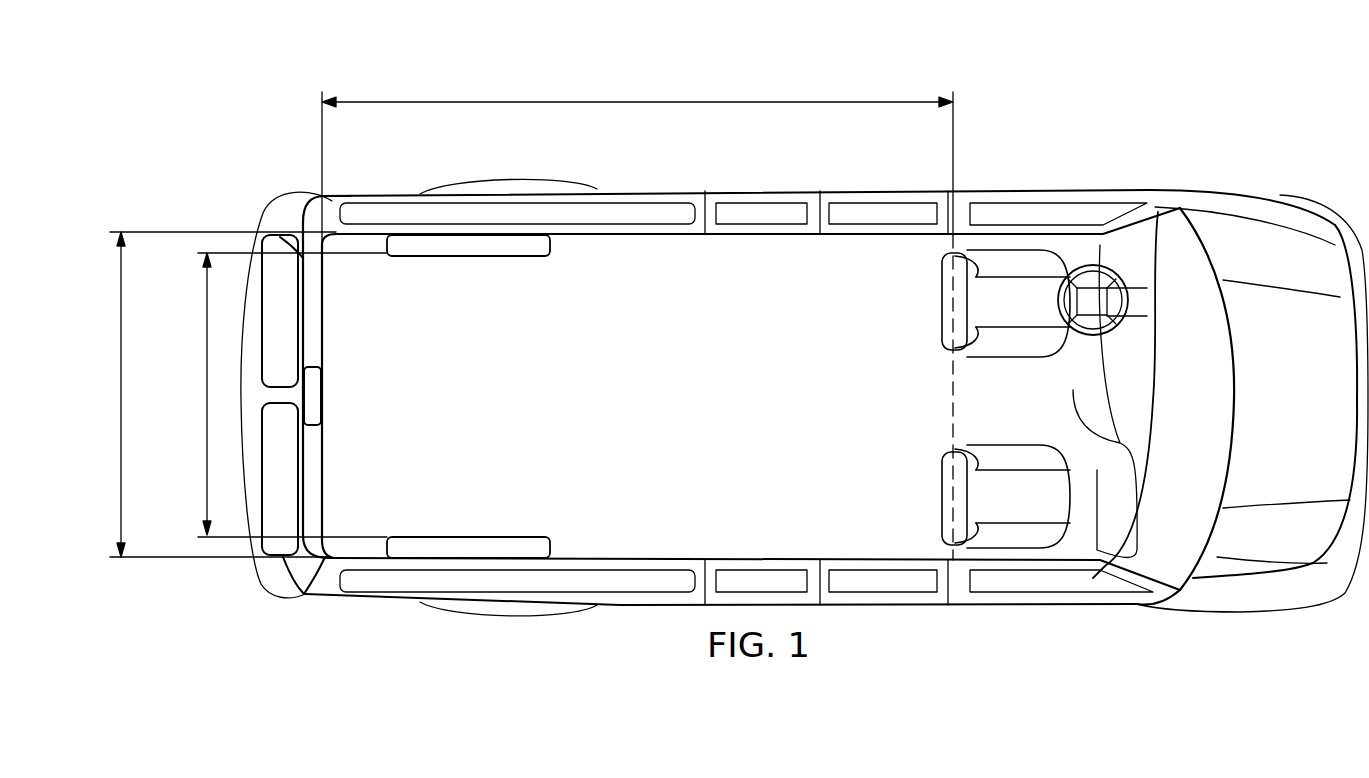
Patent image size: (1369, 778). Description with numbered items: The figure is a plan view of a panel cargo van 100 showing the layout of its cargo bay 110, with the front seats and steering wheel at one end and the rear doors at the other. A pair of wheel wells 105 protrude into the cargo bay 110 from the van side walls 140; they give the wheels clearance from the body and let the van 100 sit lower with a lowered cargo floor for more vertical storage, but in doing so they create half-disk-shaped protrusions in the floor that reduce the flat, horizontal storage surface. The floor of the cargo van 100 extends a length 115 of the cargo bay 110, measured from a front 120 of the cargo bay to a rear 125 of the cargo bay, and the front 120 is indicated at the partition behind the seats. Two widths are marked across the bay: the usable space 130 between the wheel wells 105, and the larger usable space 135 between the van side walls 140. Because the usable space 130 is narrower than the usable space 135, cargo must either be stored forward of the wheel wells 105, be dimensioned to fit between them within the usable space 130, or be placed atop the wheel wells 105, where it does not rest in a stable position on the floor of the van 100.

The cargo van 100 is at (1192, 118).
The wheel wells 105 is at (469, 258).
The cargo bay 110 is at (660, 412).
The length of the cargo bay 115 is at (632, 102).
The front of the cargo bay 120 is at (953, 397).
The rear of the cargo bay 125 is at (323, 352).
The usable space between the wheel wells 130 is at (207, 393).
The usable space between the van side walls 135 is at (121, 393).
The van side walls 140 is at (673, 237).